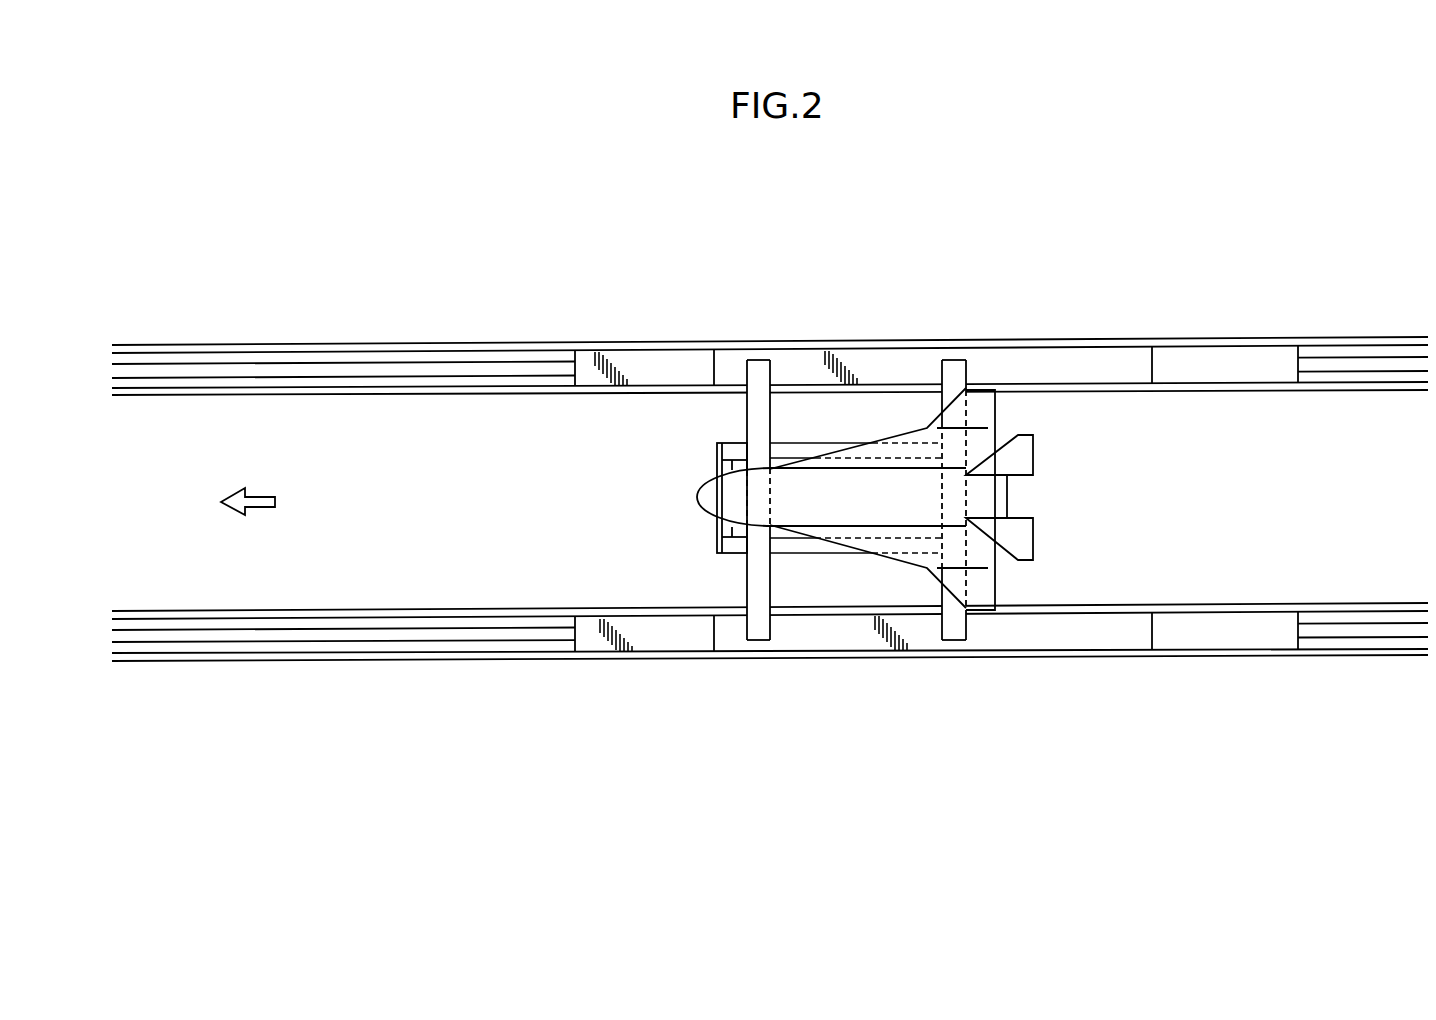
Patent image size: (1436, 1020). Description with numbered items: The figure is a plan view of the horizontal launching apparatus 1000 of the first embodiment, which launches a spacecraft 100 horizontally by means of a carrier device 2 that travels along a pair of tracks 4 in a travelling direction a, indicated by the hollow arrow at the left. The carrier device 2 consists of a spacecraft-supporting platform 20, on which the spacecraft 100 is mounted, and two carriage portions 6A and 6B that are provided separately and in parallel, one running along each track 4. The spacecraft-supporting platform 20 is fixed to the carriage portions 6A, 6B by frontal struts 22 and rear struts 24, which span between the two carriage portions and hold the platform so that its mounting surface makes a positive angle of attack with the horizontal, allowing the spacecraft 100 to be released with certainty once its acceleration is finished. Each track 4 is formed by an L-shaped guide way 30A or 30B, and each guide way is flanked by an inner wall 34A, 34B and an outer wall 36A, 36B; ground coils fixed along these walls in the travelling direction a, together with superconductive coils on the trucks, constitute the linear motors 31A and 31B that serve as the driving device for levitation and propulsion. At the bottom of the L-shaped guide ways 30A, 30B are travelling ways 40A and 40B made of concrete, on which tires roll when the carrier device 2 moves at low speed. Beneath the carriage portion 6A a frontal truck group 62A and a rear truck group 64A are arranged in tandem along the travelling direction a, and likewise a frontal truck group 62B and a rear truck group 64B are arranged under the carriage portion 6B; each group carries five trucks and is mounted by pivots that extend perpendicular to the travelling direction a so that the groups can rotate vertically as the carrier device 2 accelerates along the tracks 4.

The horizontal launching apparatus 1000 is at (1107, 283).
The carrier device 2 is at (677, 517).
The tracks 4 is at (382, 662).
The carriage portion 6A is at (850, 653).
The carriage portion 6B is at (868, 349).
The spacecraft-supporting platform 20 is at (718, 466).
The frontal struts 22 is at (757, 410).
The rear struts 24 is at (942, 402).
The L-shaped guide way 30A is at (530, 637).
The L-shaped guide way 30B is at (530, 368).
The linear motor 31A is at (1013, 655).
The linear motor 31B is at (1013, 343).
The inner wall 34A is at (352, 609).
The inner wall 34B is at (465, 394).
The outer wall 36A is at (287, 661).
The outer wall 36B is at (452, 344).
The travelling way 40A is at (192, 641).
The travelling way 40B is at (370, 393).
The frontal truck group 62A is at (652, 658).
The frontal truck group 62B is at (655, 350).
The rear truck group 64A is at (1228, 652).
The rear truck group 64B is at (1228, 348).
The spacecraft 100 is at (968, 494).
The travelling direction a is at (248, 484).